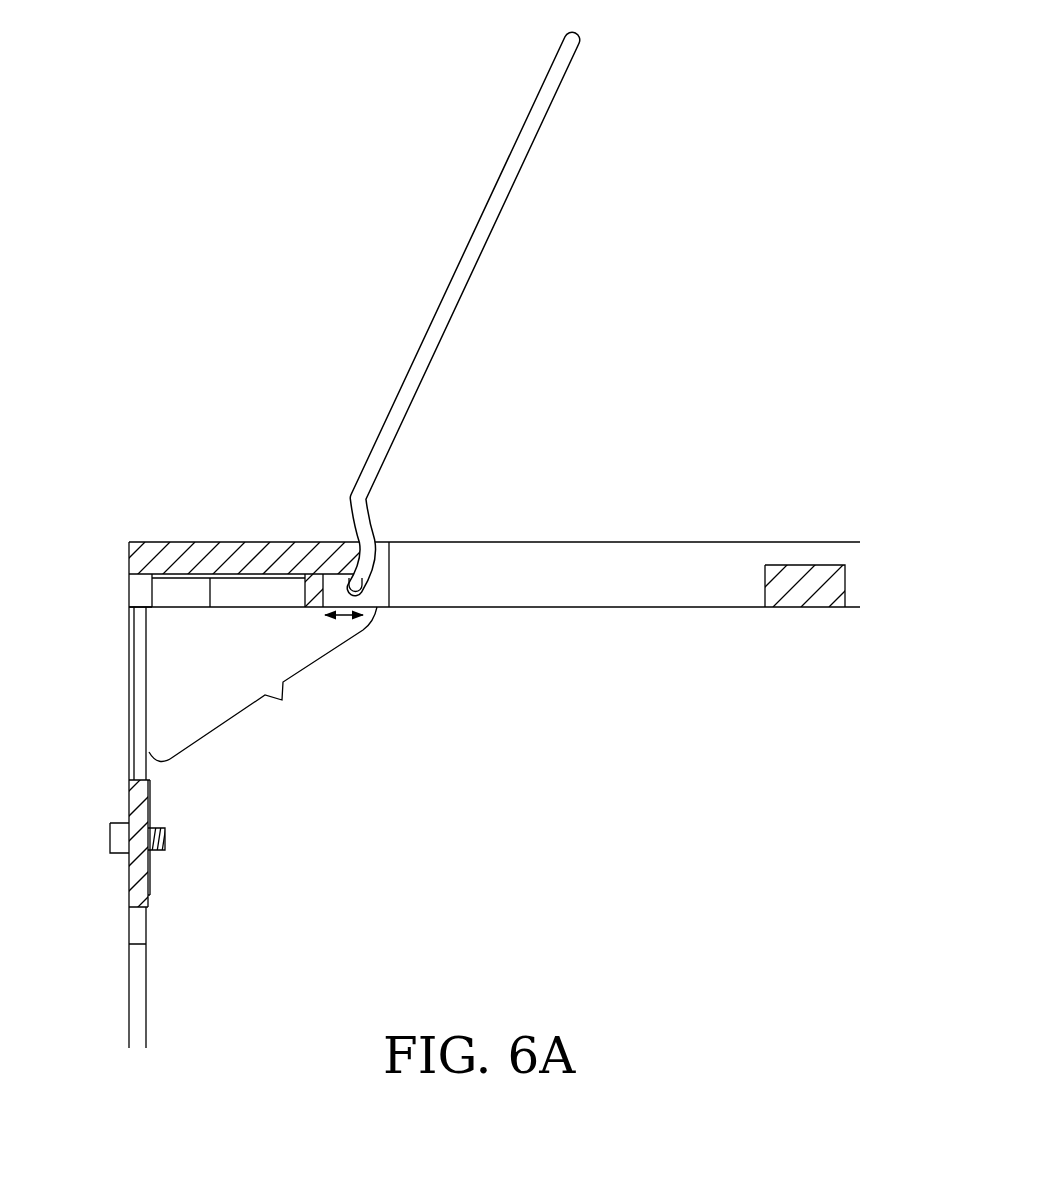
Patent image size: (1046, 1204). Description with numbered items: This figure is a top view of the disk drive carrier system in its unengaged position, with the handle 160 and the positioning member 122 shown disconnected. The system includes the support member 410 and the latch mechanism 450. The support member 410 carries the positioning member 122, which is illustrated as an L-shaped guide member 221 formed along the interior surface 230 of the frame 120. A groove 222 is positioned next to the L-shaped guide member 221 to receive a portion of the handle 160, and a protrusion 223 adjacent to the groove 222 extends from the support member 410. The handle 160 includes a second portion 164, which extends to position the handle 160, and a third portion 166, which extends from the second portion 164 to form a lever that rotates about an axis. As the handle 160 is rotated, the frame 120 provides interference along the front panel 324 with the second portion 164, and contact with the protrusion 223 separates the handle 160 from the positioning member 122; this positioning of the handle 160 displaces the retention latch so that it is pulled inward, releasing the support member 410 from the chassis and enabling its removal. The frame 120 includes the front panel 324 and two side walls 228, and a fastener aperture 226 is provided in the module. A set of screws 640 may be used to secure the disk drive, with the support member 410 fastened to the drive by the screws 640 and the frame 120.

The frame 120 is at (149, 1027).
The positioning member 122 is at (298, 609).
The handle 160 is at (475, 289).
The second portion 164 is at (378, 540).
The third portion 166 is at (577, 44).
The L-shaped guide member 221 is at (302, 585).
The groove 222 is at (385, 597).
The protrusion 223 is at (382, 575).
The fastener aperture 226 is at (152, 870).
The side walls 228 is at (141, 971).
The interior surface 230 is at (222, 592).
The front panel 324 is at (300, 540).
The support member 410 is at (136, 999).
The latch mechanism 450 is at (263, 684).
The screws 640 is at (119, 832).